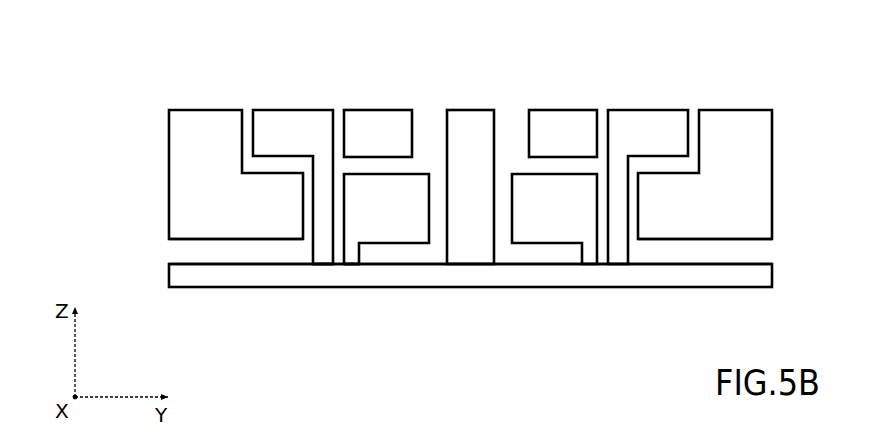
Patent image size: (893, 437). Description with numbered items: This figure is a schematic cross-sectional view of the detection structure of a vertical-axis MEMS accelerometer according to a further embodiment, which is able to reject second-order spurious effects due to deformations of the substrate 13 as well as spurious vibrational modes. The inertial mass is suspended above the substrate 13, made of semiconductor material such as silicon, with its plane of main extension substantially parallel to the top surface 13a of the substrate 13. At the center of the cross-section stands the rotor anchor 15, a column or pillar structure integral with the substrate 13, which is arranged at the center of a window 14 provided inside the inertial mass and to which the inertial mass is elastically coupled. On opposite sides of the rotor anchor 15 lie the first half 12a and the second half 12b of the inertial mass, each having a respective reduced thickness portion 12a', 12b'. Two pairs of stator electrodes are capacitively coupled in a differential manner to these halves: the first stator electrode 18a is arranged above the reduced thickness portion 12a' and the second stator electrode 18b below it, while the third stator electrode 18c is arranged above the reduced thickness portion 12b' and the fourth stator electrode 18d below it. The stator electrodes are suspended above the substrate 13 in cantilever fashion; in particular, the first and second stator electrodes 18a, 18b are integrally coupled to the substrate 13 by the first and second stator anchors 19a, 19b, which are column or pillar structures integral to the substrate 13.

The first half of the inertial mass 12a is at (214, 139).
The reduced thickness portion 12a' is at (236, 276).
The second half of the inertial mass 12b is at (705, 135).
The reduced thickness portion 12b' is at (705, 283).
The substrate 13 is at (755, 273).
The top surface 13a is at (752, 263).
The window 14 is at (498, 140).
The rotor anchor 15 is at (468, 255).
The first stator electrode 18a is at (280, 125).
The second stator electrode 18b is at (418, 187).
The third stator electrode 18c is at (650, 123).
The fourth stator electrode 18d is at (530, 185).
The first stator anchor 19a is at (324, 257).
The second stator anchor 19b is at (352, 258).